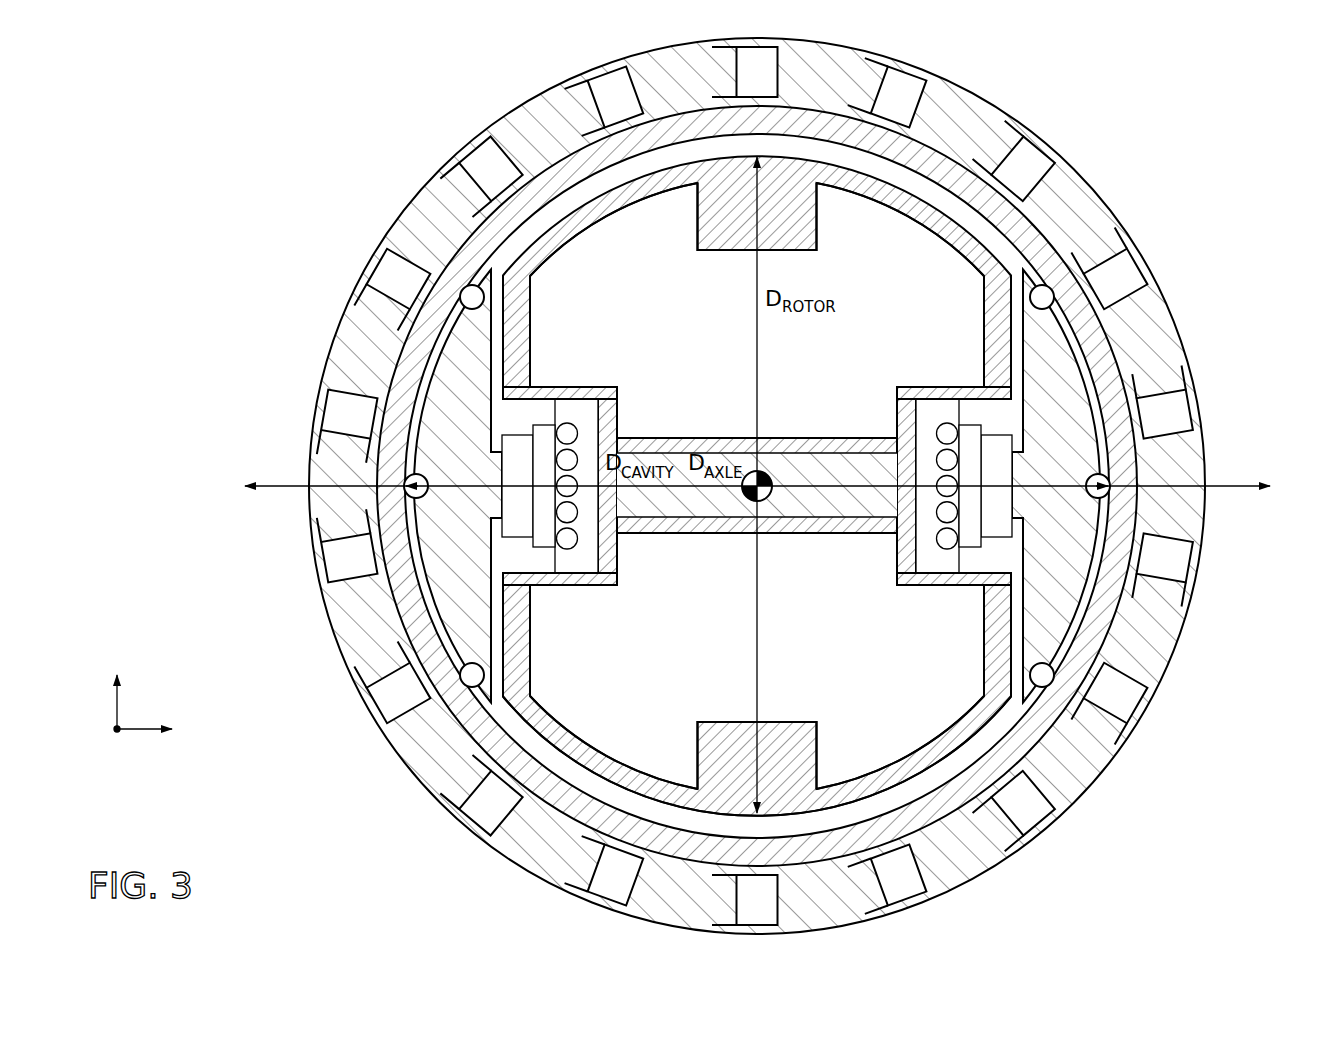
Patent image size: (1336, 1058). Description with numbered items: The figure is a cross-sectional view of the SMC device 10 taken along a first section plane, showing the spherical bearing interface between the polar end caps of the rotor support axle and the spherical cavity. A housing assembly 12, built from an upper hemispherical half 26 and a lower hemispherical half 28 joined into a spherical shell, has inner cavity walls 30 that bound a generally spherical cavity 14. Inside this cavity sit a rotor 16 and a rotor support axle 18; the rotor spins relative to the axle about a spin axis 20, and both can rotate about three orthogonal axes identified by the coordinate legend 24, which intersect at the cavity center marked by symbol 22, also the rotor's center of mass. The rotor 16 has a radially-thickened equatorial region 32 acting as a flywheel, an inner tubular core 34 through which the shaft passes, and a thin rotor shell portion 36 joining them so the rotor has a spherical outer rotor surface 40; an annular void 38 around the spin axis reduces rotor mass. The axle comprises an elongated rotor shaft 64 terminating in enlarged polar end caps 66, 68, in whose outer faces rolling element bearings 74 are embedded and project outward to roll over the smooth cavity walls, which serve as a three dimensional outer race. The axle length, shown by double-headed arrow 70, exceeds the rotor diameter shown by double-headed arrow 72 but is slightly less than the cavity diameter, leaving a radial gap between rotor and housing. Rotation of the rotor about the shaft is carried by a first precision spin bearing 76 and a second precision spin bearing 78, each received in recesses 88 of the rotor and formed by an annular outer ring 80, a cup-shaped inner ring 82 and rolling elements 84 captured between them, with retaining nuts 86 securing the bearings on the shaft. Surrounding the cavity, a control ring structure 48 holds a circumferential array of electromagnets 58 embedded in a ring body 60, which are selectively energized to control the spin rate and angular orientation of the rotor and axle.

The SMC device 10 is at (265, 152).
The housing assembly 12 is at (1122, 212).
The generally spherical cavity 14 is at (752, 145).
The rotor 16 is at (908, 188).
The rotor support axle 18 is at (442, 396).
The spin axis 20 is at (272, 486).
The symbol 22 is at (762, 470).
The coordinate legend 24 is at (120, 714).
The upper hemispherical half 26 is at (453, 263).
The lower hemispherical half 28 is at (467, 733).
The inner cavity walls 30 is at (540, 212).
The equatorial region 32 is at (757, 486).
The inner tubular core 34 is at (730, 535).
The rotor shell portion 36 is at (593, 223).
The annular void 38 is at (757, 732).
The outer rotor surface 40 is at (560, 753).
The control ring structure 48 is at (330, 368).
The electromagnets 58 is at (755, 486).
The ring body 60 is at (341, 486).
The rotor shaft 64 is at (757, 485).
The polar end cap 66 is at (458, 486).
The polar end cap 68 is at (1056, 486).
The double-headed arrow 70 is at (820, 468).
The double-headed arrow 72 is at (750, 372).
The rolling element bearings 74 is at (484, 297).
The first precision spin bearing 76 is at (587, 388).
The second precision spin bearing 78 is at (927, 388).
The annular outer ring 80 is at (575, 400).
The cup-shaped inner ring 82 is at (580, 577).
The rolling elements 84 is at (577, 433).
The retaining nuts 86 is at (517, 435).
The recesses 88 is at (757, 495).